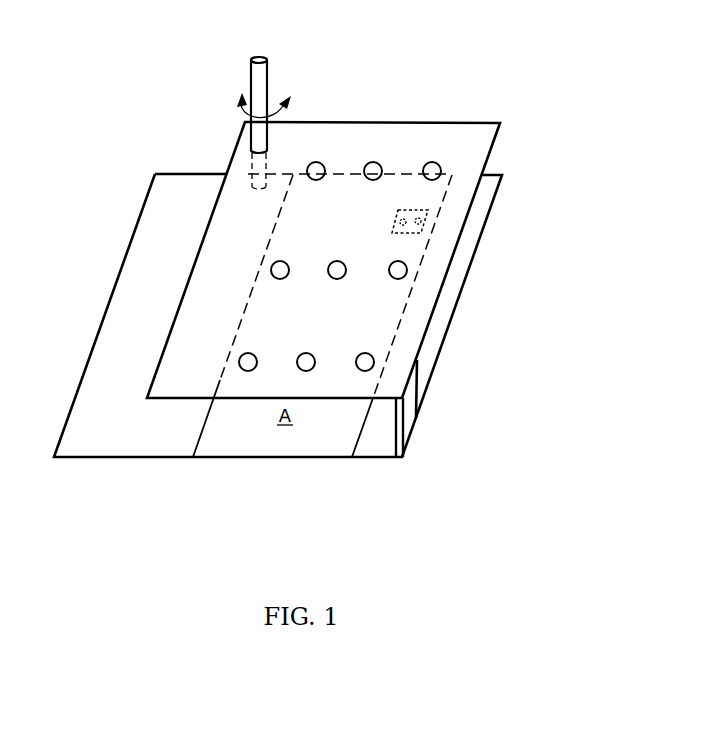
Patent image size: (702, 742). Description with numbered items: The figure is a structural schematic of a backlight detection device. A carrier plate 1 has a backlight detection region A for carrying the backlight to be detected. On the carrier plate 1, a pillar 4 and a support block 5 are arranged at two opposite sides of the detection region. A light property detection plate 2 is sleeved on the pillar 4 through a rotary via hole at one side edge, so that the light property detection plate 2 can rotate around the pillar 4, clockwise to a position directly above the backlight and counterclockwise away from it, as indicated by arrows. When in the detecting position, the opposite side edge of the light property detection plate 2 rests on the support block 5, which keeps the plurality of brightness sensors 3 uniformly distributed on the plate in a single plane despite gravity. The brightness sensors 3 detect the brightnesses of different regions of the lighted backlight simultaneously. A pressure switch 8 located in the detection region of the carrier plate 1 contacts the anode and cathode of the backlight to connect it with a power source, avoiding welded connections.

The carrier plate 1 is at (278, 300).
The light property detection plate 2 is at (366, 289).
The brightness sensors 3 is at (412, 266).
The pillar 4 is at (189, 123).
The support block 5 is at (487, 409).
The pressure switch 8 is at (488, 186).